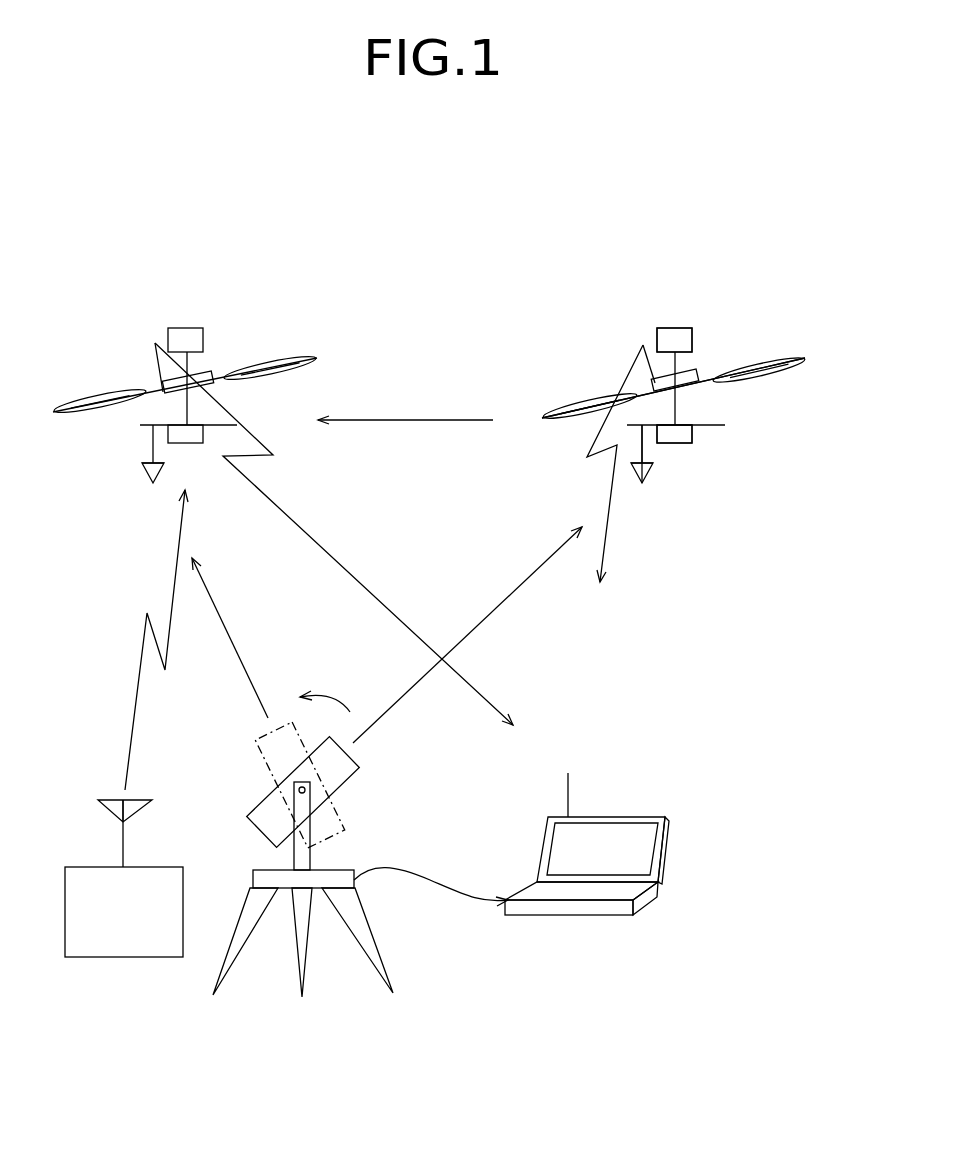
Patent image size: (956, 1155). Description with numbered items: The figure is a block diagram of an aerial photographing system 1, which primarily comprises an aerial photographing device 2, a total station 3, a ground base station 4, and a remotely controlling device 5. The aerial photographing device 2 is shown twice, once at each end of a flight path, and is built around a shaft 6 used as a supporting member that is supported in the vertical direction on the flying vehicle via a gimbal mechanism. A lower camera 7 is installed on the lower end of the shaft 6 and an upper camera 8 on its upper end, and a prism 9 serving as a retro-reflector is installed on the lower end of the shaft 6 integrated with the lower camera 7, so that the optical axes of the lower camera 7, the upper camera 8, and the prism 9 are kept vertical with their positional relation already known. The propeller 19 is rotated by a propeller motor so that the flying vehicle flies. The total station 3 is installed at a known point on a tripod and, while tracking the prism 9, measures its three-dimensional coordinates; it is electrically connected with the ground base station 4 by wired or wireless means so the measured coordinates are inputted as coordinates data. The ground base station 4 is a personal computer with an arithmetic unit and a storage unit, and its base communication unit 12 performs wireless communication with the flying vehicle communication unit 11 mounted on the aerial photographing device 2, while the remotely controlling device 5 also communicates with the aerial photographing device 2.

The aerial photographing system 1 is at (414, 208).
The aerial photographing device 2 is at (160, 322).
The total station 3 is at (345, 818).
The ground base station 4 is at (622, 815).
The remotely controlling device 5 is at (83, 867).
The shaft 6 is at (680, 404).
The lower camera 7 is at (683, 443).
The upper camera 8 is at (676, 328).
The prism 9 is at (650, 482).
The flying vehicle communication unit 11 is at (643, 345).
The base communication unit 12 is at (572, 797).
The propeller 19 is at (768, 356).